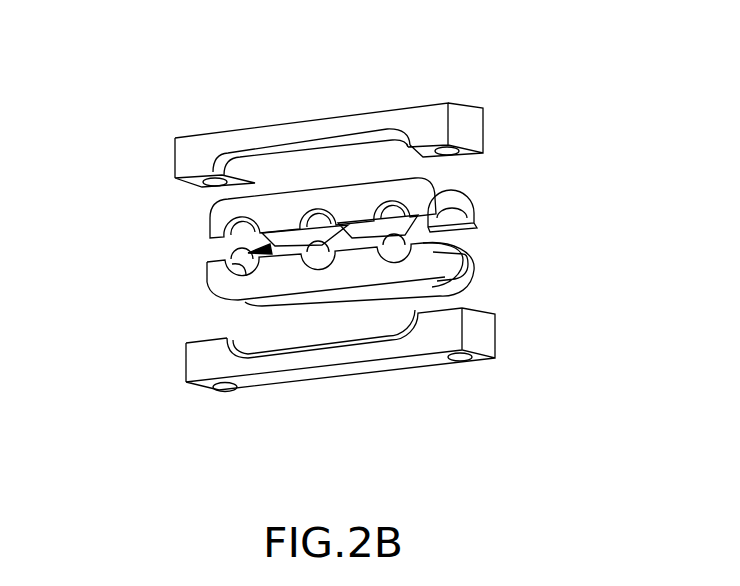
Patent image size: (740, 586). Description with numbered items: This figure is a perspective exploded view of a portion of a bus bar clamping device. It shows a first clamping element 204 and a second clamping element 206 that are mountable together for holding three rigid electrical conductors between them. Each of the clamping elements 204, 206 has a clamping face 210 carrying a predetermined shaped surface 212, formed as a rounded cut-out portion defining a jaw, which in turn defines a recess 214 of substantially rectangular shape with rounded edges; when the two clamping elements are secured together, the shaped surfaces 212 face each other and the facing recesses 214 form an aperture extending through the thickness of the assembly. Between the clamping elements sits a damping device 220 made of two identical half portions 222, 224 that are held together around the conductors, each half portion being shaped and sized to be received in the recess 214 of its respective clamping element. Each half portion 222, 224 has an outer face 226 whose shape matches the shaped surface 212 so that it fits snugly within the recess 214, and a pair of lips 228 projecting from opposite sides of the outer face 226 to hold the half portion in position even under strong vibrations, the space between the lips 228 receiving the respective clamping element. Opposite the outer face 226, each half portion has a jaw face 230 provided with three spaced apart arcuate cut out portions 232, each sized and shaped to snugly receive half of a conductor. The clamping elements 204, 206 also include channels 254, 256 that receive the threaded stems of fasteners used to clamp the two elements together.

The first clamping element 204 is at (487, 340).
The second clamping element 206 is at (469, 120).
The clamping face 210 is at (348, 166).
The predetermined shaped surface 212 is at (374, 140).
The recess 214 is at (277, 178).
The damping device 220 is at (347, 292).
The first half portion 222 is at (431, 234).
The second half portion 224 is at (502, 205).
The outer face 226 is at (437, 258).
The lips 228 is at (460, 212).
The jaw face 230 is at (275, 266).
The arcuate cut out portions 232 is at (247, 273).
The channel 254 is at (228, 392).
The channel 256 is at (466, 371).